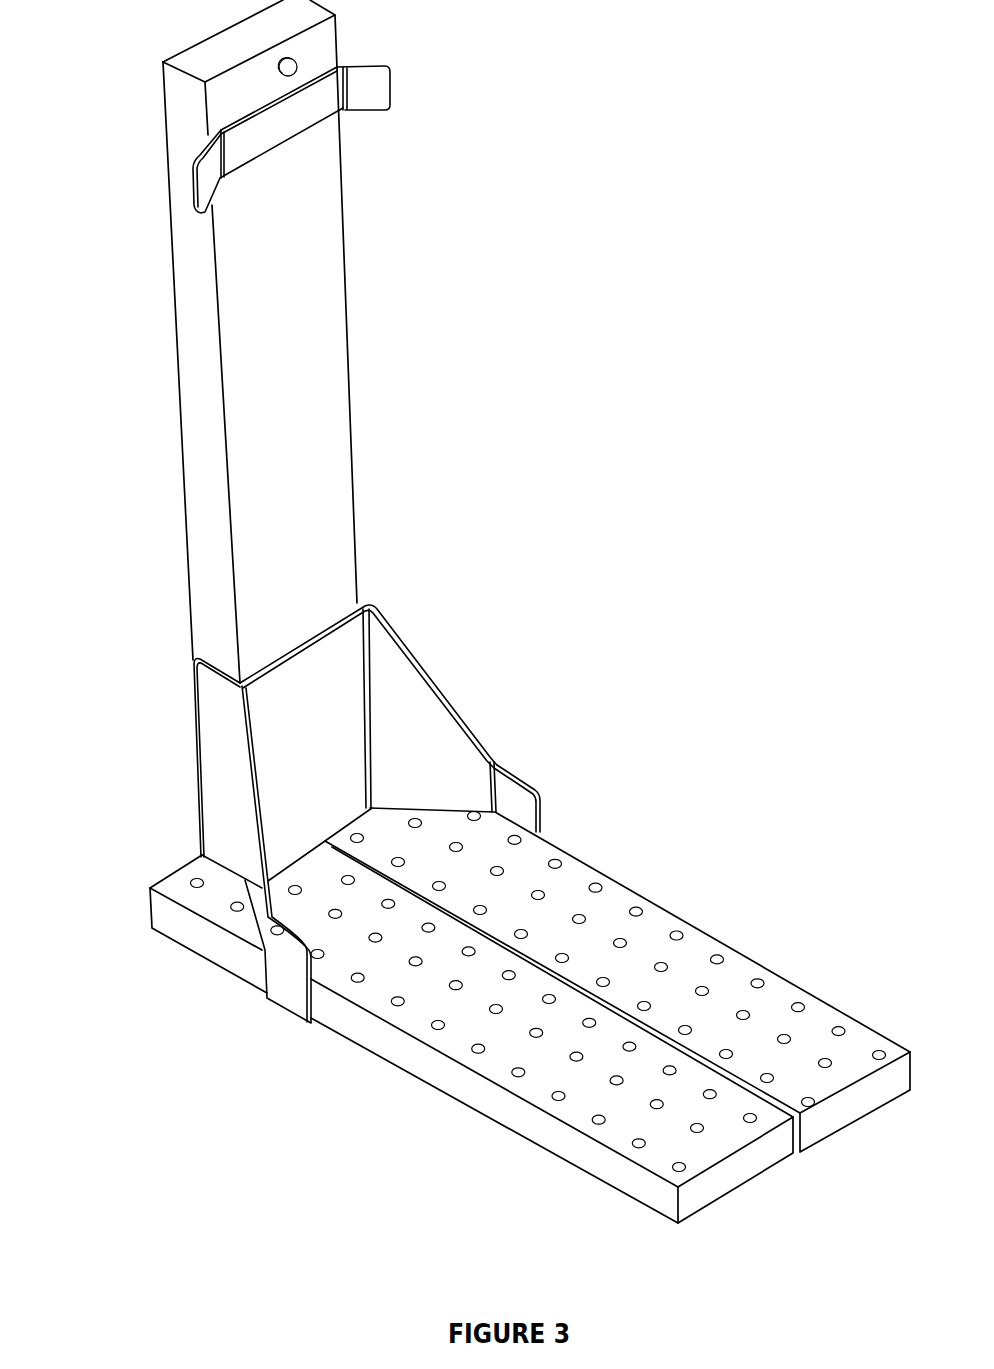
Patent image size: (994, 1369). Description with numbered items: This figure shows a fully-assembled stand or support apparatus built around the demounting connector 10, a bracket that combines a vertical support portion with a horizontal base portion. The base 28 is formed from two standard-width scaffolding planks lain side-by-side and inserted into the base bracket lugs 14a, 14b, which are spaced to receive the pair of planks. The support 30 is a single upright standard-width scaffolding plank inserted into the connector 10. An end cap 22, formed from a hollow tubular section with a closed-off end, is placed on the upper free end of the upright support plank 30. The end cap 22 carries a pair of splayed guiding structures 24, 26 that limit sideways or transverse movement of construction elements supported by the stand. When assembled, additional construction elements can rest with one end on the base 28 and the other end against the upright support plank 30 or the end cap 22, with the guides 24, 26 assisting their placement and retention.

The demounting connector 10 is at (320, 759).
The bracket lug 14a is at (518, 800).
The bracket lug 14b is at (287, 975).
The end cap 22 is at (288, 177).
The guiding structure 24 is at (375, 88).
The guiding structure 26 is at (207, 175).
The base 28 is at (688, 1092).
The support 30 is at (304, 420).